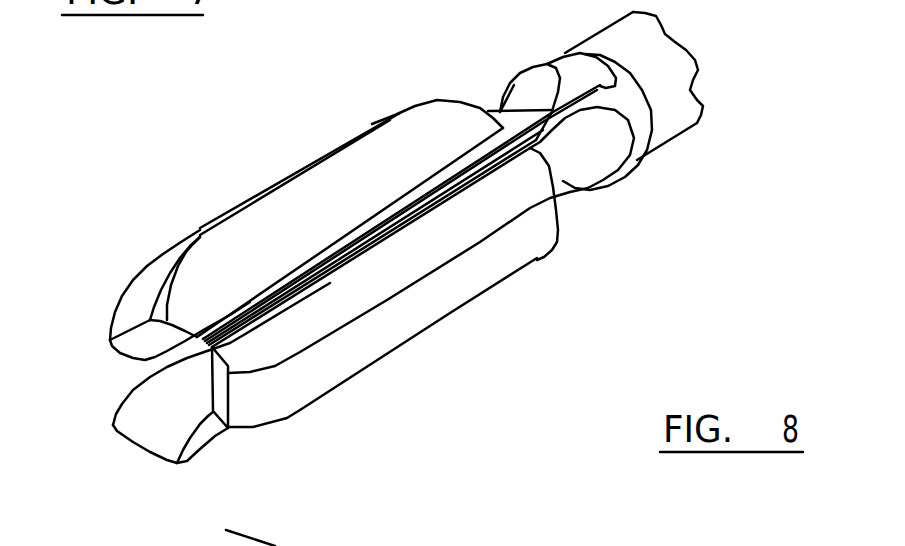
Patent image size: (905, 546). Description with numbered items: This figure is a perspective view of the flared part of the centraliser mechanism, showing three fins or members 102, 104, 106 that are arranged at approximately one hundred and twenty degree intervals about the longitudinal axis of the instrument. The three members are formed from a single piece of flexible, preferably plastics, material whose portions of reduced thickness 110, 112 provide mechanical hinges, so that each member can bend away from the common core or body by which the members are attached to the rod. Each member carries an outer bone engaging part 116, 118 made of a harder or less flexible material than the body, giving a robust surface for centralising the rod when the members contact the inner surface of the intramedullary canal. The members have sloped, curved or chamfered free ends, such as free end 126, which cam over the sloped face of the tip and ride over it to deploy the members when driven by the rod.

The member 102 is at (333, 216).
The member 104 is at (193, 414).
The member 106 is at (385, 288).
The portion of reduced thickness 110 is at (515, 56).
The portion of reduced thickness 112 is at (633, 145).
The outer bone engaging part 116 is at (343, 206).
The outer bone engaging part 118 is at (431, 240).
The free end 126 is at (131, 361).